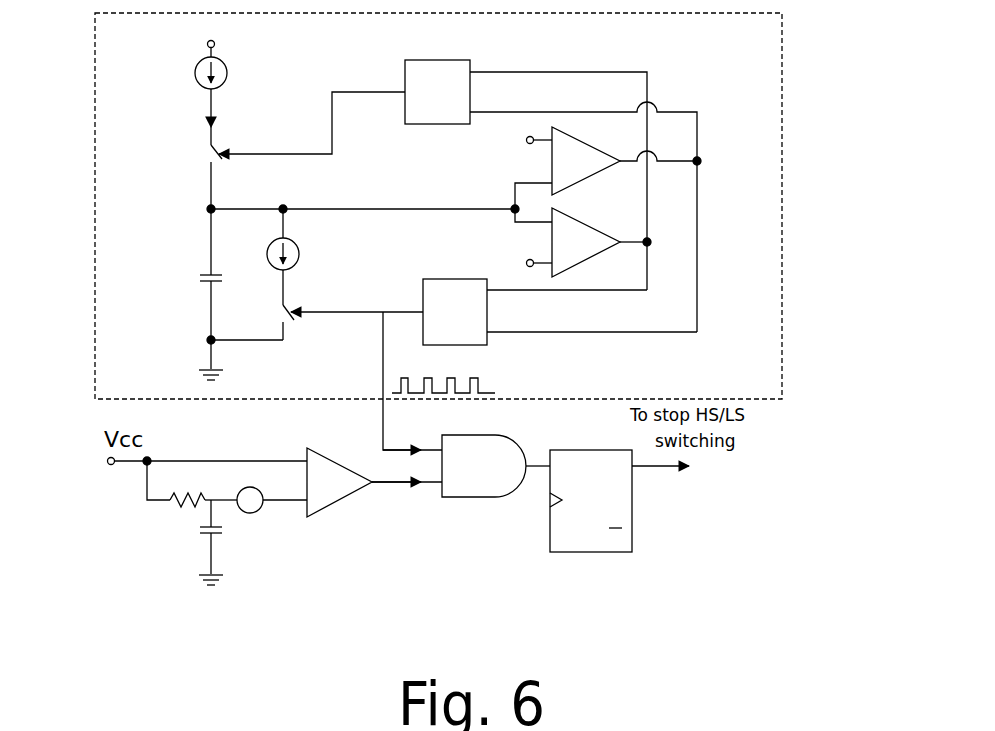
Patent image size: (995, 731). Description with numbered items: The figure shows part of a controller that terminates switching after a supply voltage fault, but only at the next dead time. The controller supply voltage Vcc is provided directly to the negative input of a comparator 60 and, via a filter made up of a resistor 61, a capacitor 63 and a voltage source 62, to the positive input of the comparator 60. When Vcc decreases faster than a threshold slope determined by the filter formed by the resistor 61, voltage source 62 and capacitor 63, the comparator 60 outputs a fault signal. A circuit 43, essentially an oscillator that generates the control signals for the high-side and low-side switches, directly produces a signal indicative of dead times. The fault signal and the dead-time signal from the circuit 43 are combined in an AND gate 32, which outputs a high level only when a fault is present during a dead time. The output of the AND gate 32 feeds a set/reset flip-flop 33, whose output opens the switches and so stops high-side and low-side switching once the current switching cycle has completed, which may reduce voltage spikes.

The circuit 43 is at (782, 289).
The resistor 61 is at (192, 495).
The voltage source 62 is at (257, 490).
The comparator 60 is at (337, 508).
The capacitor 63 is at (219, 535).
The AND gate 32 is at (478, 497).
The set/reset flip-flop 33 is at (632, 543).